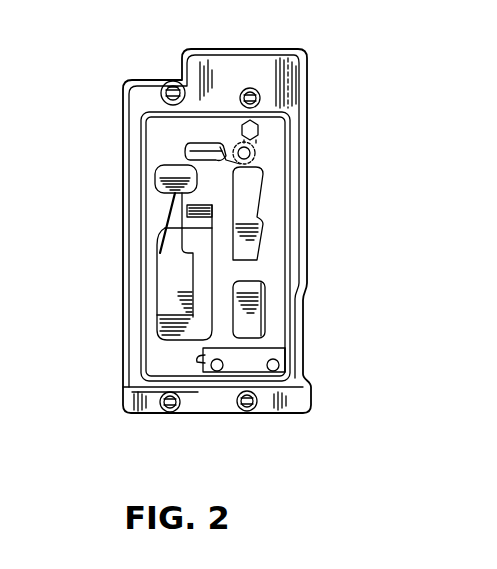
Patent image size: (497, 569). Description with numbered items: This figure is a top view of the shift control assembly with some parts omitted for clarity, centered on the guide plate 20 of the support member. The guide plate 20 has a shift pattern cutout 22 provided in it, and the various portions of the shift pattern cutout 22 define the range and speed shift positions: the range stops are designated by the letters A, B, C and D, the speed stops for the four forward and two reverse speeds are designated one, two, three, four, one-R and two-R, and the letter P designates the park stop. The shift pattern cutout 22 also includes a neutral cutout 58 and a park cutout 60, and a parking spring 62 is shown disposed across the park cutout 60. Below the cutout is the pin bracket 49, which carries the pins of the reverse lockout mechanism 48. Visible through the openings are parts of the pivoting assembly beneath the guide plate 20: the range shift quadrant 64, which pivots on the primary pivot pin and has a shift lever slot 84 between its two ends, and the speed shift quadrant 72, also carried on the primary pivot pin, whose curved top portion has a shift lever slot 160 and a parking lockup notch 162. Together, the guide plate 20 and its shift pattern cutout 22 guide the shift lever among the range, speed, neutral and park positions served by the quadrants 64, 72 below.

The guide plate 20 is at (152, 136).
The shift pattern cutout 22 is at (190, 265).
The reverse lockout mechanism 48 is at (292, 362).
The pin bracket 49 is at (238, 368).
The neutral cutout 58 is at (187, 212).
The park cutout 60 is at (197, 188).
The parking spring 62 is at (220, 147).
The range shift quadrant 64 is at (247, 194).
The speed shift quadrant 72 is at (183, 316).
The shift lever slot 84 is at (243, 281).
The shift lever slot 160 is at (182, 222).
The parking lockup notch 162 is at (188, 141).